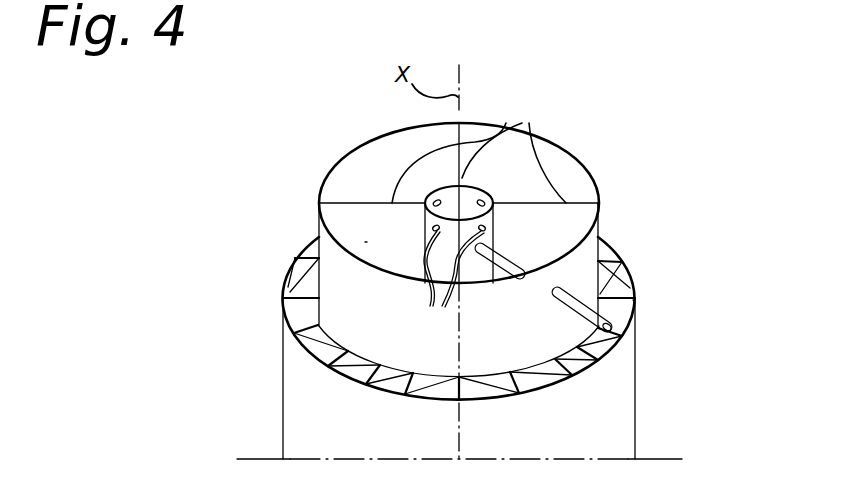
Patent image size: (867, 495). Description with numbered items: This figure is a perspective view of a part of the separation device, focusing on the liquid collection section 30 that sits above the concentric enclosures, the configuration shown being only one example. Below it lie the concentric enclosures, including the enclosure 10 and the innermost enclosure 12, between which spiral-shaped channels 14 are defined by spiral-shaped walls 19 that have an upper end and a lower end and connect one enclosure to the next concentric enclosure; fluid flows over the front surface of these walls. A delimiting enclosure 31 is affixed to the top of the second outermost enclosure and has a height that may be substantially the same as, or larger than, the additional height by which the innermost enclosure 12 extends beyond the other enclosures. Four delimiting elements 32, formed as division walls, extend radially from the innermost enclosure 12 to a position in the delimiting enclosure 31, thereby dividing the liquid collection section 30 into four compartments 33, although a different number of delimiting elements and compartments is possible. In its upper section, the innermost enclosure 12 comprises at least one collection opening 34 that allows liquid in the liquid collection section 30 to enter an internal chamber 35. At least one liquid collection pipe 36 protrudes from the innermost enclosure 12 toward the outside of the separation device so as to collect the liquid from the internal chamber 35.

The enclosure 10 is at (645, 389).
The innermost enclosure 12 is at (493, 228).
The spiral-shaped channels 14 is at (298, 320).
The spiral-shaped walls 19 is at (625, 272).
The liquid collection section 30 is at (394, 170).
The delimiting enclosure 31 is at (600, 200).
The delimiting elements 32 is at (506, 123).
The compartments 33 is at (367, 242).
The collection opening 34 is at (446, 280).
The internal chamber 35 is at (462, 207).
The liquid collection pipe 36 is at (634, 302).